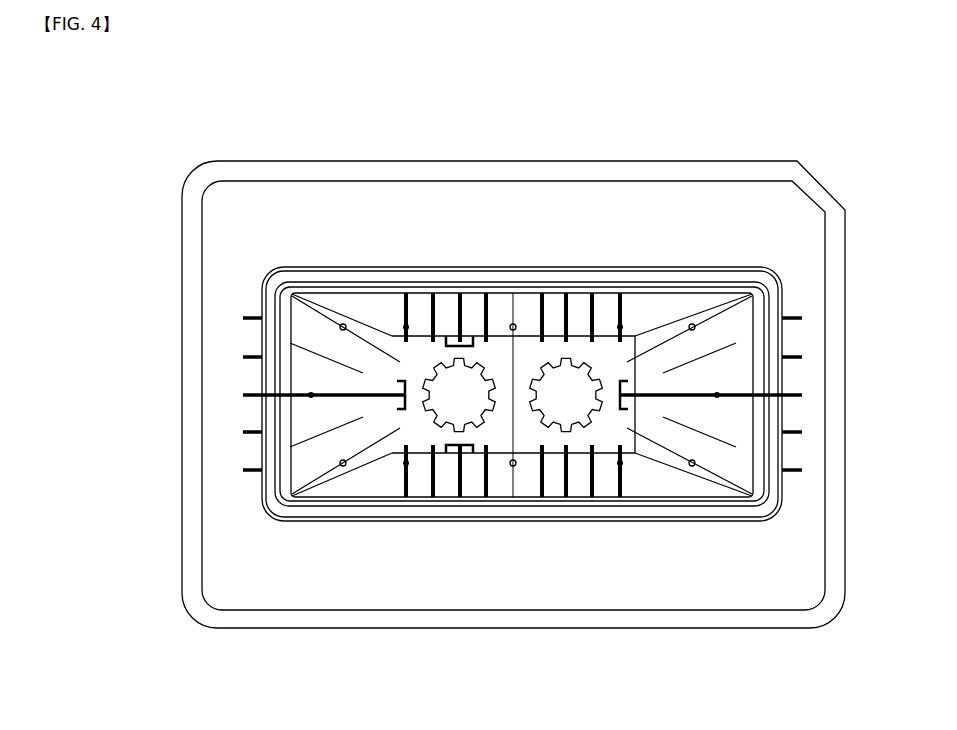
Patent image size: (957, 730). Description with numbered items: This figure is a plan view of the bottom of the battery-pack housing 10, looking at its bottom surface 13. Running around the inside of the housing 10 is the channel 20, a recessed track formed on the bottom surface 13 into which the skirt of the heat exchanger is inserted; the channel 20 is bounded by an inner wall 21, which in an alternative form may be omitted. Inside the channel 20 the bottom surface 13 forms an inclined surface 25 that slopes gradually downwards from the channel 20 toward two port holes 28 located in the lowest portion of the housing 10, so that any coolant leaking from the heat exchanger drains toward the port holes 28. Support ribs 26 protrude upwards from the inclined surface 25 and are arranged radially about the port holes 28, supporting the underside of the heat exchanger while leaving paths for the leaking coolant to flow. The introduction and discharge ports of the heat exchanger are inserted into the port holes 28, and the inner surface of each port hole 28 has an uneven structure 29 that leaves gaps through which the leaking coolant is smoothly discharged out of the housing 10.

The housing 10 is at (170, 227).
The bottom surface 13 is at (222, 276).
The channel 20 is at (262, 380).
The inner wall 21 is at (278, 423).
The inclined surface 25 is at (348, 442).
The support ribs 26 is at (628, 490).
The port holes 28 is at (578, 390).
The uneven structure 29 is at (438, 420).